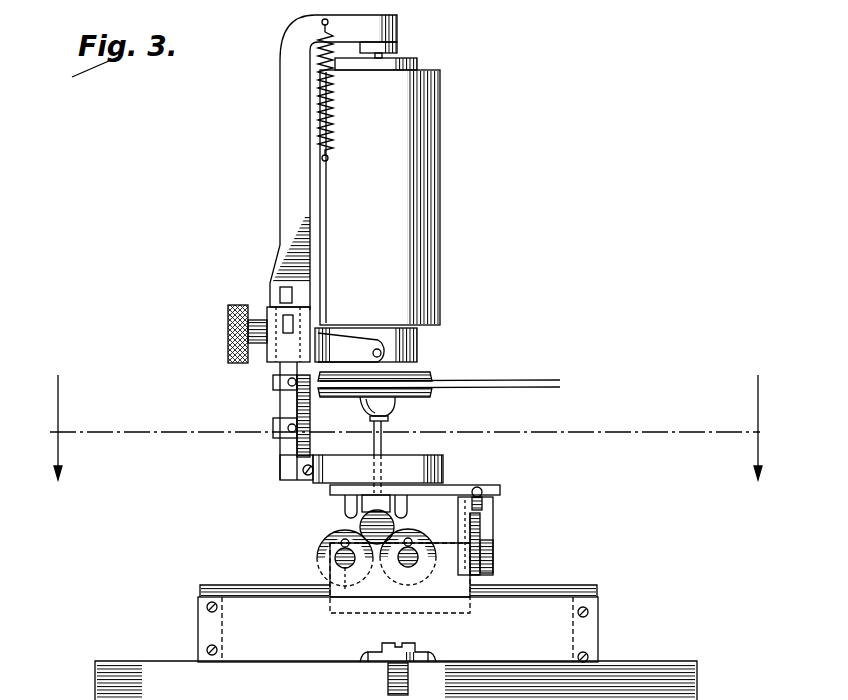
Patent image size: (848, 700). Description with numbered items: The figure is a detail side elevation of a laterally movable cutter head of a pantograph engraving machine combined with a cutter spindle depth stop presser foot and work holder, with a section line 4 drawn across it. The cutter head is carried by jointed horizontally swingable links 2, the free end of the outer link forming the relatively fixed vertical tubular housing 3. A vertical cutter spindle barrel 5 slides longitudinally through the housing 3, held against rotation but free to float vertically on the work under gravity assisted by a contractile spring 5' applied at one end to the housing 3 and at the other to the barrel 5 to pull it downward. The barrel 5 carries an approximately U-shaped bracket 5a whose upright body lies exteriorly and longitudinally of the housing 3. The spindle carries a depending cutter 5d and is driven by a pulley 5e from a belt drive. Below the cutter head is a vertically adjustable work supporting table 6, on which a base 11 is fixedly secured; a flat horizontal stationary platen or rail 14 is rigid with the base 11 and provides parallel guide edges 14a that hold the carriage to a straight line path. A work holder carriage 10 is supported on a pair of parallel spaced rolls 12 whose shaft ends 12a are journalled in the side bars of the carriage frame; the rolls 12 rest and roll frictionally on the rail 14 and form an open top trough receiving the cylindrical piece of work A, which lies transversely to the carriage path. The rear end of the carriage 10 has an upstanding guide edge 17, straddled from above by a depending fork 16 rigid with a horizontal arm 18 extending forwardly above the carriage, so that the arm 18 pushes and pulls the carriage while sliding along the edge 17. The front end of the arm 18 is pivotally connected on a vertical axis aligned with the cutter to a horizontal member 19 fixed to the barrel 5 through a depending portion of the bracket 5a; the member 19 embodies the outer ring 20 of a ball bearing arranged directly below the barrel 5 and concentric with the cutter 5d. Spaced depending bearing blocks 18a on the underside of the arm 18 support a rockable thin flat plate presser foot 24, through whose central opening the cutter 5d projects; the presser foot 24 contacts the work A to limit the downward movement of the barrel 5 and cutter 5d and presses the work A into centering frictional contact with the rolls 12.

The jointed horizontally swingable links 2 is at (128, 73).
The cutter head housing 3 is at (420, 214).
The section line 4- 4 is at (406, 427).
The cutter spindle barrel 5 is at (383, 192).
The contractile spring 5' is at (283, 90).
The U-shaped bracket 5a is at (296, 160).
The cutter 5d is at (381, 445).
The pulley 5e is at (433, 377).
The work supporting table 6 is at (686, 690).
The work holder carriage 10 is at (453, 580).
The base 11 is at (588, 644).
The rolls 12 is at (330, 554).
The shaft ends 12a is at (340, 541).
The platen or rail 14 is at (537, 595).
The guide edges 14a is at (540, 598).
The depending fork 16 is at (474, 540).
The guide edge 17 is at (492, 531).
The horizontal arm 18 is at (484, 492).
The bearing blocks 18a is at (448, 491).
The horizontal member 19 is at (297, 480).
The outer ring 20 is at (413, 440).
The presser foot 24 is at (387, 510).
The piece of work A is at (358, 525).